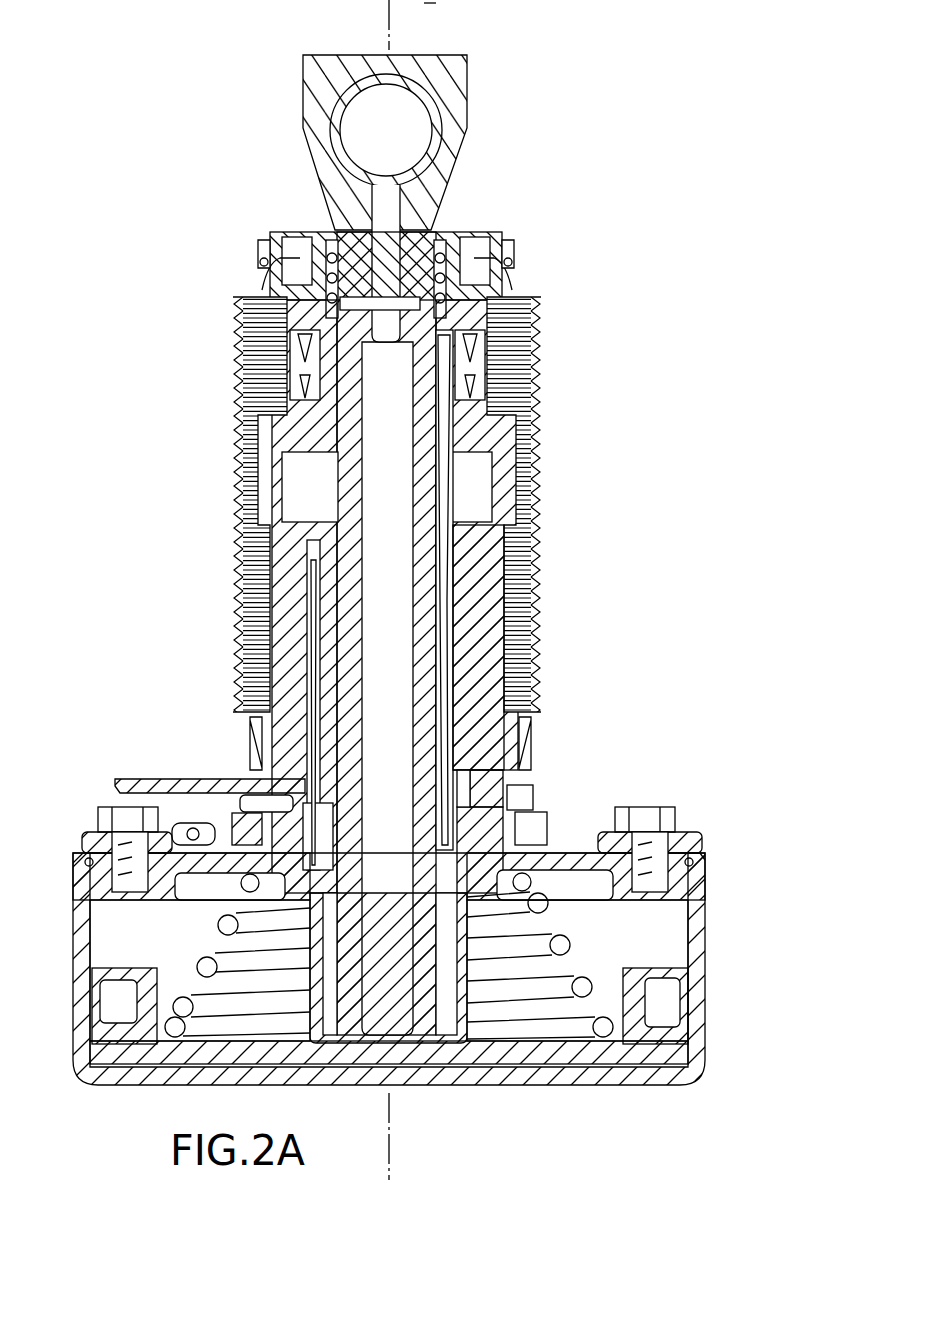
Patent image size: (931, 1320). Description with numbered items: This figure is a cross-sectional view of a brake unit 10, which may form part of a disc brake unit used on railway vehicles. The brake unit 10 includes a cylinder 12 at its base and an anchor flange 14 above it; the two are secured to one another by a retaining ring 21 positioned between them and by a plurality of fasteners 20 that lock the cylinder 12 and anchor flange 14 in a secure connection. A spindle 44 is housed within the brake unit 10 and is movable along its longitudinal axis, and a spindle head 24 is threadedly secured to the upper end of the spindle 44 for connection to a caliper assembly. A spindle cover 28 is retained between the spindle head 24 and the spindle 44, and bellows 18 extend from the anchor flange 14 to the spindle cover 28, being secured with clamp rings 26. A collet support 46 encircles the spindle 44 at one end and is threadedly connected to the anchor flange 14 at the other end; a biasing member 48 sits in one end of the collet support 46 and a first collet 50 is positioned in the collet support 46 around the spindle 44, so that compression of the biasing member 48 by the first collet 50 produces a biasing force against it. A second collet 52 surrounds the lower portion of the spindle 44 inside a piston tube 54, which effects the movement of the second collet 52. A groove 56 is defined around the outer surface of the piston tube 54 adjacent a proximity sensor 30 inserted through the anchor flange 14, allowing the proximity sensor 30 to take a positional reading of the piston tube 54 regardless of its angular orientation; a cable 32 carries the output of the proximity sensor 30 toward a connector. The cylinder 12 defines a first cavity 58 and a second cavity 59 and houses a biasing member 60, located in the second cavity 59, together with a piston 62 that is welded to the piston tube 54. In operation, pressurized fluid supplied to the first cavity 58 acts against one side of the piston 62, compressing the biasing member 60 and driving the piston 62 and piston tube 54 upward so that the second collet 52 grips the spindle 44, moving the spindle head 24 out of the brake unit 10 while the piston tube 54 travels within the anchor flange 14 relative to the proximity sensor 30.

The brake unit 10 is at (176, 466).
The cylinder 12 is at (697, 958).
The anchor flange 14 is at (578, 850).
The bellows 18 is at (541, 470).
The fasteners 20 is at (672, 823).
The retaining ring 21 is at (712, 861).
The spindle head 24 is at (462, 70).
The clamp rings 26 is at (508, 266).
The spindle cover 28 is at (483, 228).
The proximity sensor 30 is at (273, 787).
The cable 32 is at (152, 778).
The spindle 44 is at (423, 352).
The collet support 46 is at (295, 292).
The biasing member 48 is at (333, 255).
The first collet 50 is at (322, 343).
The second collet 52 is at (445, 548).
The piston tube 54 is at (460, 696).
The groove 56 is at (460, 815).
The first cavity 58 is at (665, 1033).
The second cavity 59 is at (650, 925).
The biasing member 60 is at (585, 1025).
The piston 62 is at (630, 1052).